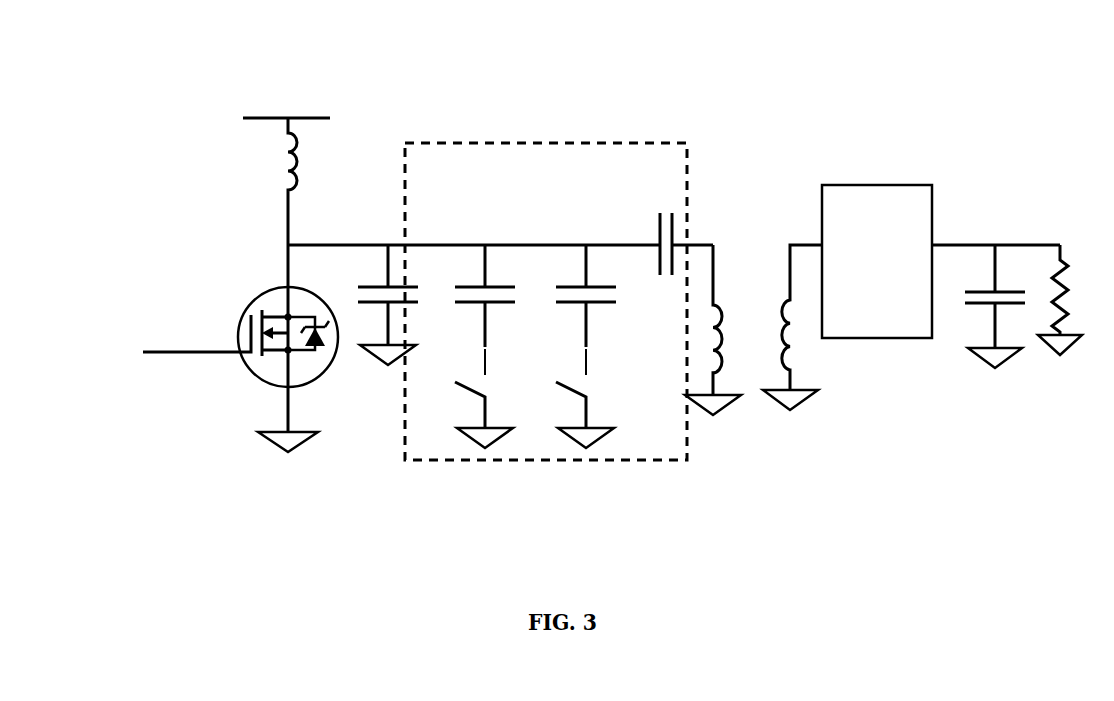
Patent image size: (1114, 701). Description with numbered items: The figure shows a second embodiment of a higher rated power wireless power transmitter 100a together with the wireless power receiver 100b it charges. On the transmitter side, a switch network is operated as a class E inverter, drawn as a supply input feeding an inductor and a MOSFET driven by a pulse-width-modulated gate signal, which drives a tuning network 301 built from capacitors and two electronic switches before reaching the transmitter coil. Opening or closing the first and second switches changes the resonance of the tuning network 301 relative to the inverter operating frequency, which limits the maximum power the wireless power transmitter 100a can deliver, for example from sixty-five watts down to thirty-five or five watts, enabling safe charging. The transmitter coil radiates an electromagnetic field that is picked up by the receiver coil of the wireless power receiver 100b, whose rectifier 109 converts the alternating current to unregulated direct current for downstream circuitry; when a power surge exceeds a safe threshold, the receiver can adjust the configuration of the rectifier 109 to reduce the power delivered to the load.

The wireless power transmitter 100a is at (408, 62).
The wireless power receiver 100b is at (846, 80).
The tuning network 301 is at (493, 168).
The rectifier 109 is at (870, 185).